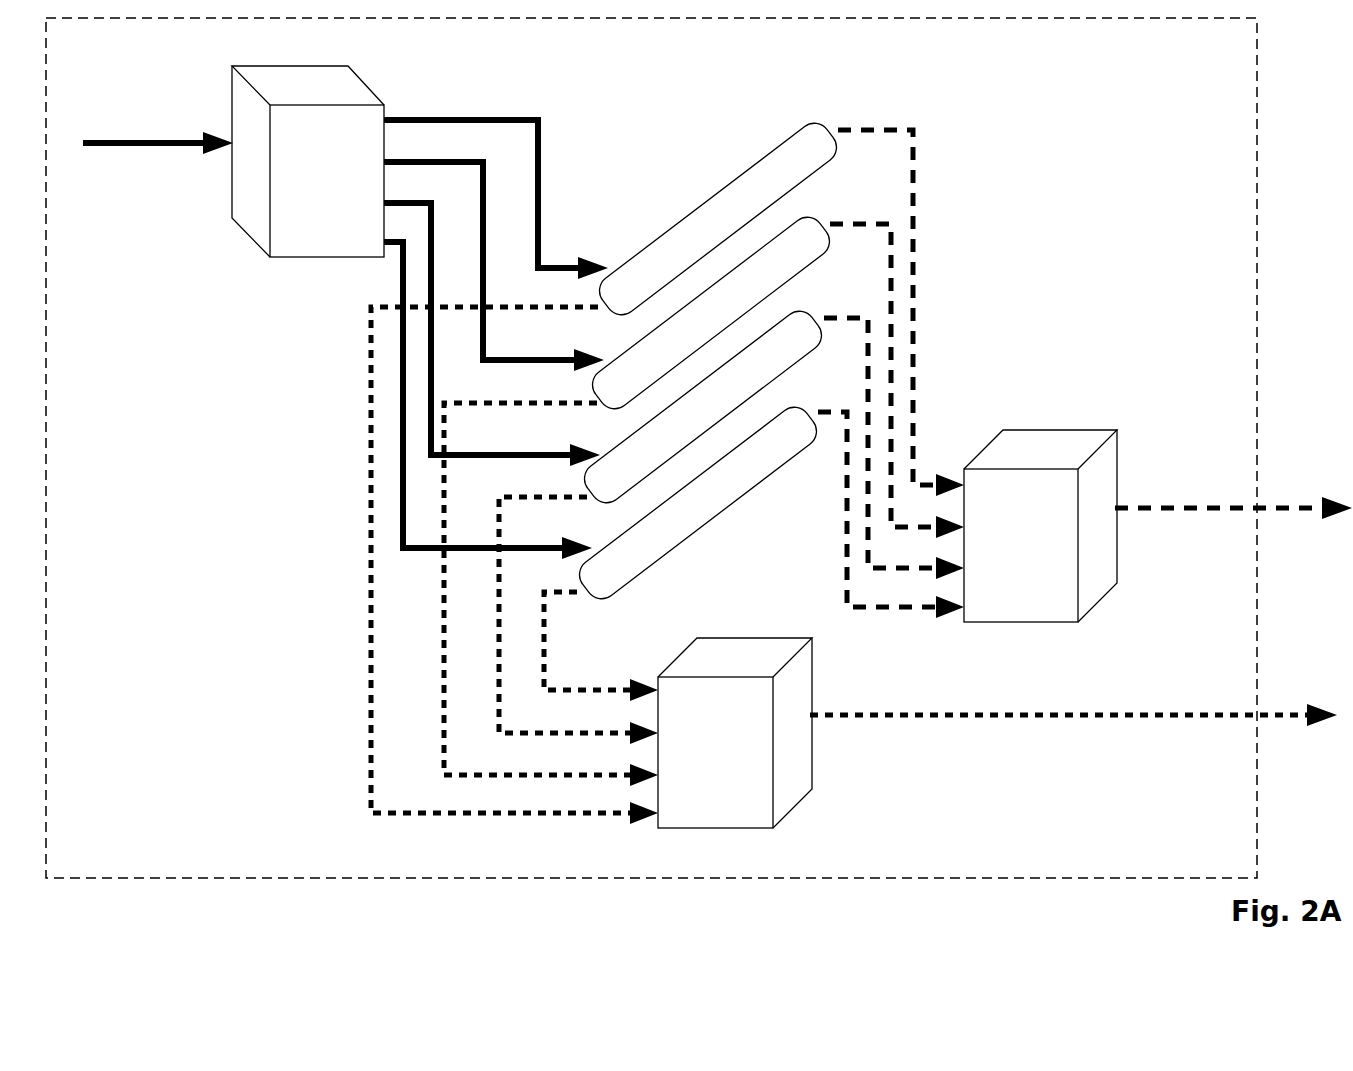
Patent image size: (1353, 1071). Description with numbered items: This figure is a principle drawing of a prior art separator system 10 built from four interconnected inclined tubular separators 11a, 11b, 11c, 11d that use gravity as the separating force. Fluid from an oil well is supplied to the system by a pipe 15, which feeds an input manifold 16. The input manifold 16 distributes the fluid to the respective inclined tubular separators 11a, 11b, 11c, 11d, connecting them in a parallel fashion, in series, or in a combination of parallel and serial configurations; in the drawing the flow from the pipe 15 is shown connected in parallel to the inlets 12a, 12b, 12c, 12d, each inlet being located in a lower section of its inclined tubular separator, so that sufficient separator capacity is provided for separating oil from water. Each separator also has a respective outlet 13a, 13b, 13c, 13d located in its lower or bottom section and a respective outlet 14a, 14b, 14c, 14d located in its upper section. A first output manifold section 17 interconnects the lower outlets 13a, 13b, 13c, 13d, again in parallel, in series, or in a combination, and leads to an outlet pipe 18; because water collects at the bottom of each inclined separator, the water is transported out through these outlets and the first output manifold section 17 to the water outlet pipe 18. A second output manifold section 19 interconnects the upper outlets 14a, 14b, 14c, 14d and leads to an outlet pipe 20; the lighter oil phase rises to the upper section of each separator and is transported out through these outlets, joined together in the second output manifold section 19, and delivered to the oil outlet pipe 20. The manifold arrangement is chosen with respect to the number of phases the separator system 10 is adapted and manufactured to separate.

The separator system 10 is at (1216, 60).
The inclined tubular separator 11a is at (737, 233).
The inclined tubular separator 11b is at (730, 325).
The inclined tubular separator 11c is at (722, 420).
The inclined tubular separator 11d is at (714, 518).
The inlet 12a is at (606, 265).
The inlet 12b is at (603, 357).
The inlet 12c is at (600, 452).
The inlet 12d is at (590, 546).
The outlet 13a is at (598, 303).
The outlet 13b is at (596, 400).
The outlet 13c is at (586, 495).
The outlet 13d is at (578, 596).
The outlet 14a is at (840, 128).
The outlet 14b is at (830, 222).
The outlet 14c is at (822, 316).
The outlet 14d is at (815, 410).
The pipe 15 is at (143, 142).
The input manifold 16 is at (341, 195).
The first output manifold section 17 is at (730, 767).
The outlet pipe 18 is at (900, 717).
The second output manifold section 19 is at (1035, 550).
The outlet pipe 20 is at (1218, 503).